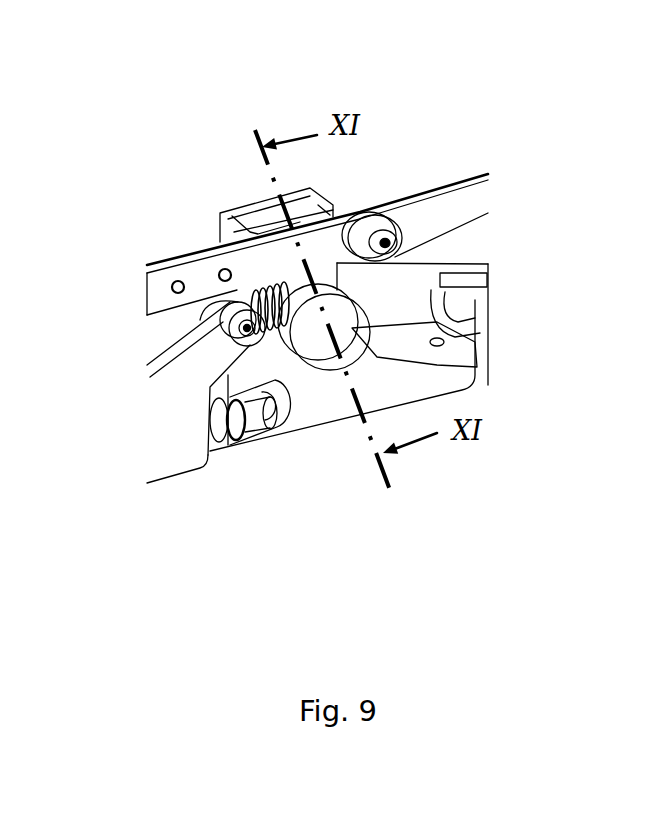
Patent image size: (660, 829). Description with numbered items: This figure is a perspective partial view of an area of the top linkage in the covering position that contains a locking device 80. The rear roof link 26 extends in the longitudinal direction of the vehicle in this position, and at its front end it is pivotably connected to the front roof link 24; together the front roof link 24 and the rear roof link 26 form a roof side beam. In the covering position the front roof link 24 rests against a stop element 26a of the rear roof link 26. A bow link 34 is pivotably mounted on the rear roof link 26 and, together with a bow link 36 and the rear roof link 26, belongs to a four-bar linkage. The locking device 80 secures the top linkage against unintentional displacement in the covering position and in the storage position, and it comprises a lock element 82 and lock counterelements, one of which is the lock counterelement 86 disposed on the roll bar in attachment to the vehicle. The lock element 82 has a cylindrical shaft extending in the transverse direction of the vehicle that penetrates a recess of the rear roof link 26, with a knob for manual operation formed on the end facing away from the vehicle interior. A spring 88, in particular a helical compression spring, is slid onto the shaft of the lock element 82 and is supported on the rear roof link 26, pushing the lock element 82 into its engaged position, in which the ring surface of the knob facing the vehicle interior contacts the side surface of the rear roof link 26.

The front roof link 24 is at (170, 448).
The rear roof link 26 is at (322, 407).
The stop element 26a is at (227, 440).
The bow link 34 is at (465, 242).
The bow link 36 is at (455, 205).
The locking device 80 is at (236, 198).
The lock element 82 is at (475, 373).
The lock counterelement 86 is at (330, 192).
The spring 88 is at (258, 288).